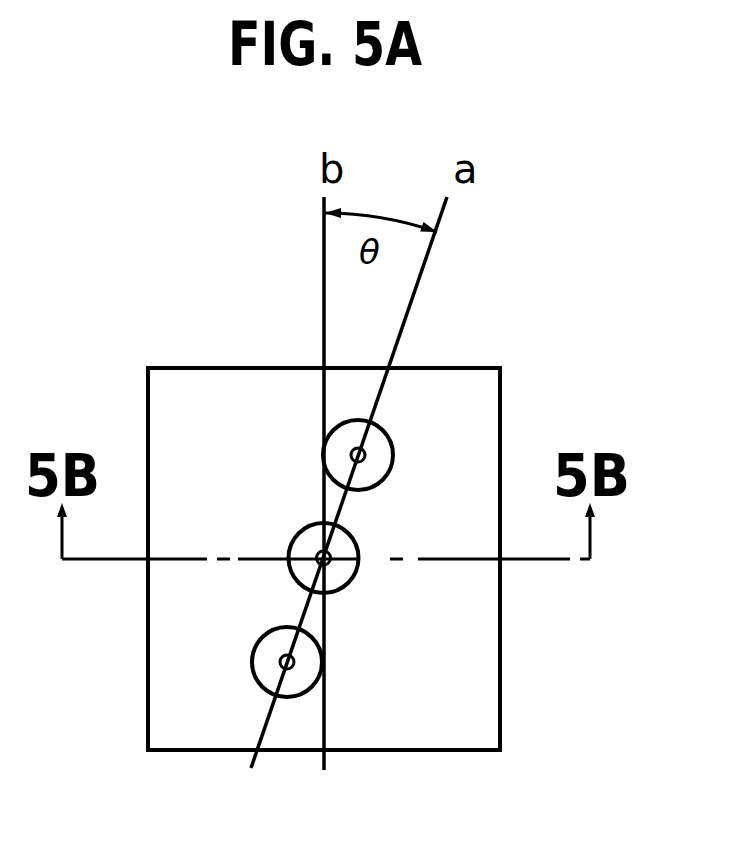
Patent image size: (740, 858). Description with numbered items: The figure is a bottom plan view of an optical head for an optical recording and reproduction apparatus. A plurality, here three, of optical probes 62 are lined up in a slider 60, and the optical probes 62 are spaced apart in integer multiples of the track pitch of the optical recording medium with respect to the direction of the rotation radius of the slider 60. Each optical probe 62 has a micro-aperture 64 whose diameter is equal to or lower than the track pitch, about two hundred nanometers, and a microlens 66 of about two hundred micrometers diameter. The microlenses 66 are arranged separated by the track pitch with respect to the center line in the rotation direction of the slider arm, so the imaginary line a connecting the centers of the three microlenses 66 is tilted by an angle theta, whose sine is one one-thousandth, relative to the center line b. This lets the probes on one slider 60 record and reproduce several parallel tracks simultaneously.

The slider 60 is at (164, 406).
The optical probe 62 is at (330, 492).
The micro-aperture 64 is at (392, 437).
The microlens 66 is at (328, 439).